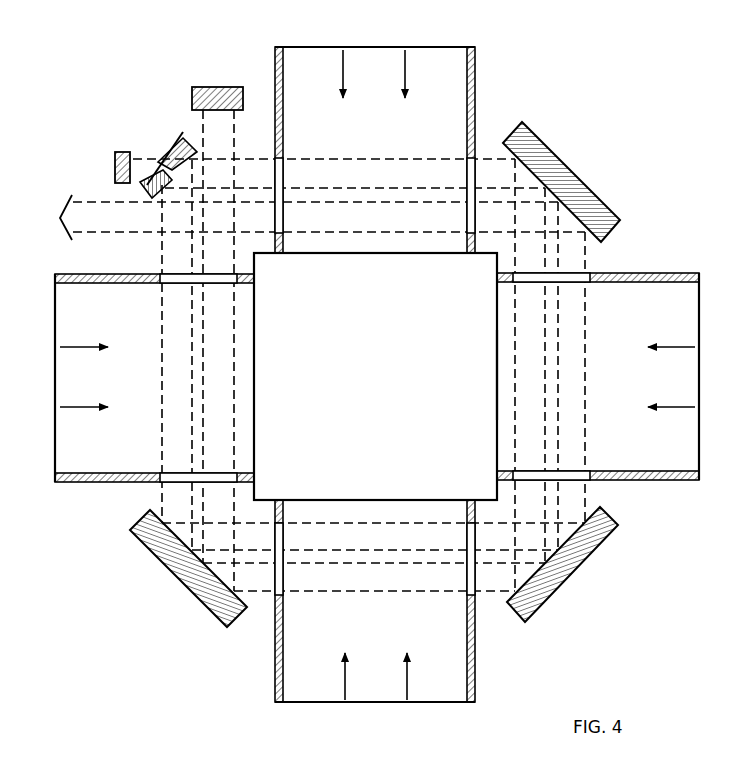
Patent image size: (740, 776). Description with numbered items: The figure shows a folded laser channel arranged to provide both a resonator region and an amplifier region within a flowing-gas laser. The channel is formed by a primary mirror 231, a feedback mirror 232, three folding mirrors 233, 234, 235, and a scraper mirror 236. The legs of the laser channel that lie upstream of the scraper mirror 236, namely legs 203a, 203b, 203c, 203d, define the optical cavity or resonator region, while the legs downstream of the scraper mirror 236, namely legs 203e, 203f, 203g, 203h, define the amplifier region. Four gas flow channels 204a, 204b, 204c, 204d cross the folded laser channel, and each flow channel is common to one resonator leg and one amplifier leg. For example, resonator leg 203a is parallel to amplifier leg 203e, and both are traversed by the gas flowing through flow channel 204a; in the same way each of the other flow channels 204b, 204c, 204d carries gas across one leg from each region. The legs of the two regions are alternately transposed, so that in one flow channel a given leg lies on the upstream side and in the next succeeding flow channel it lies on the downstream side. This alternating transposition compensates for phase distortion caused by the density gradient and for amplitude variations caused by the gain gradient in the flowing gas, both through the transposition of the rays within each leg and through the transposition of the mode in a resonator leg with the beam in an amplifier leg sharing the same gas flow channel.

The laser channel leg 203a is at (228, 374).
The laser channel leg 203b is at (340, 584).
The laser channel leg 203c is at (522, 374).
The laser channel leg 203d is at (448, 166).
The laser channel leg 203e is at (170, 375).
The laser channel leg 203f is at (419, 508).
The laser channel leg 203g is at (580, 373).
The laser channel leg 203h is at (398, 222).
The gas flow channel 204a is at (83, 463).
The gas flow channel 204b is at (458, 655).
The gas flow channel 204c is at (646, 284).
The gas flow channel 204d is at (378, 35).
The primary mirror 231 is at (232, 71).
The feedback mirror 232 is at (116, 170).
The folding mirror 233 is at (178, 583).
The folding mirror 234 is at (582, 570).
The folding mirror 235 is at (585, 192).
The scraper mirror 236 is at (184, 134).